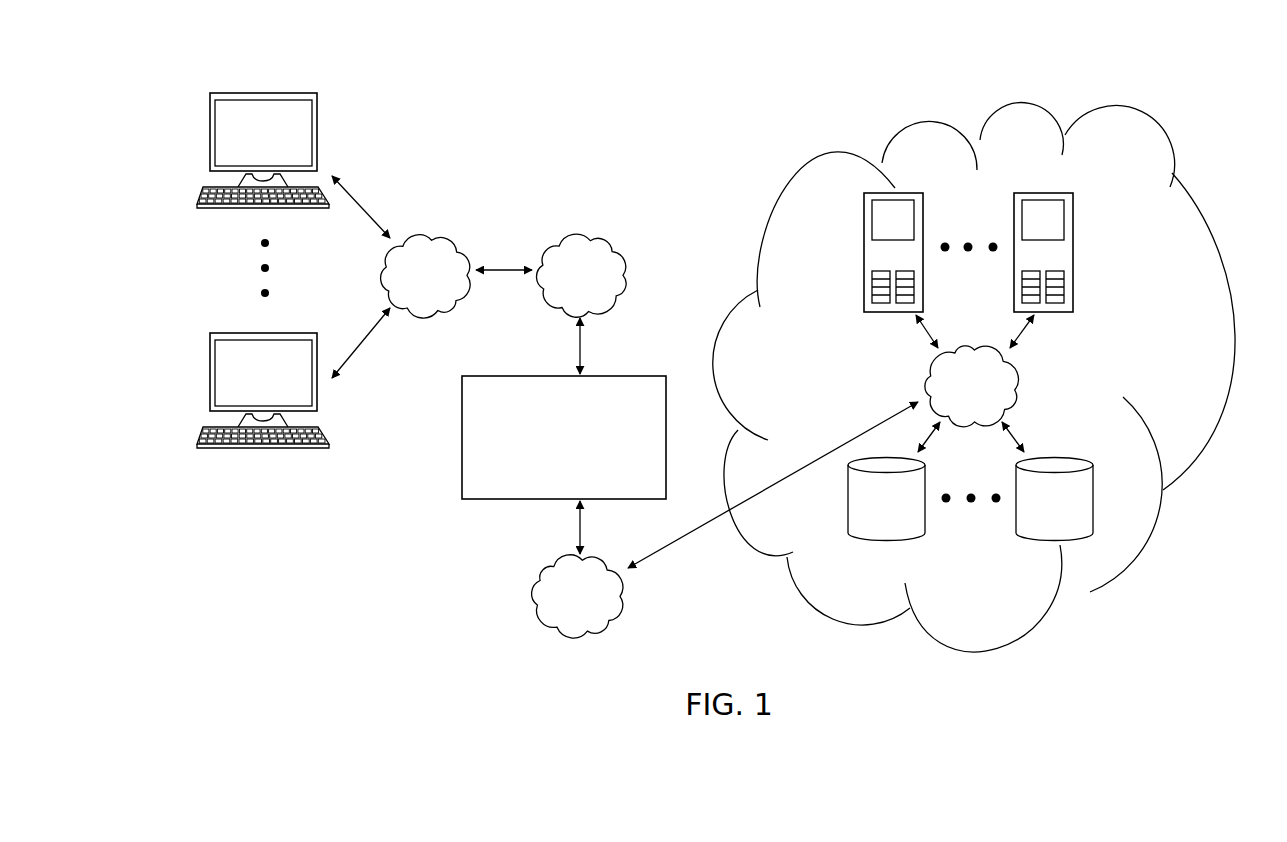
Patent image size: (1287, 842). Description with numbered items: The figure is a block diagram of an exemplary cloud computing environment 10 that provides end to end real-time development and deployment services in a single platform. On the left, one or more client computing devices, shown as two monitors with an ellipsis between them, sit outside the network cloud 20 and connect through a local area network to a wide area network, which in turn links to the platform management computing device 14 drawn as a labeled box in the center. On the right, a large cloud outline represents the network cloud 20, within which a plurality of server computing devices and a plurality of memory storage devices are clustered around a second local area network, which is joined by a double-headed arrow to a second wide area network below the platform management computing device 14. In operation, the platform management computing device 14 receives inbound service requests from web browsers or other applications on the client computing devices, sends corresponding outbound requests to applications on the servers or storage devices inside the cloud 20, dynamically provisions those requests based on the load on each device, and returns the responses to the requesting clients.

The cloud computing environment 10 is at (597, 91).
The platform management computing device 14 is at (554, 485).
The network cloud 20 is at (801, 168).